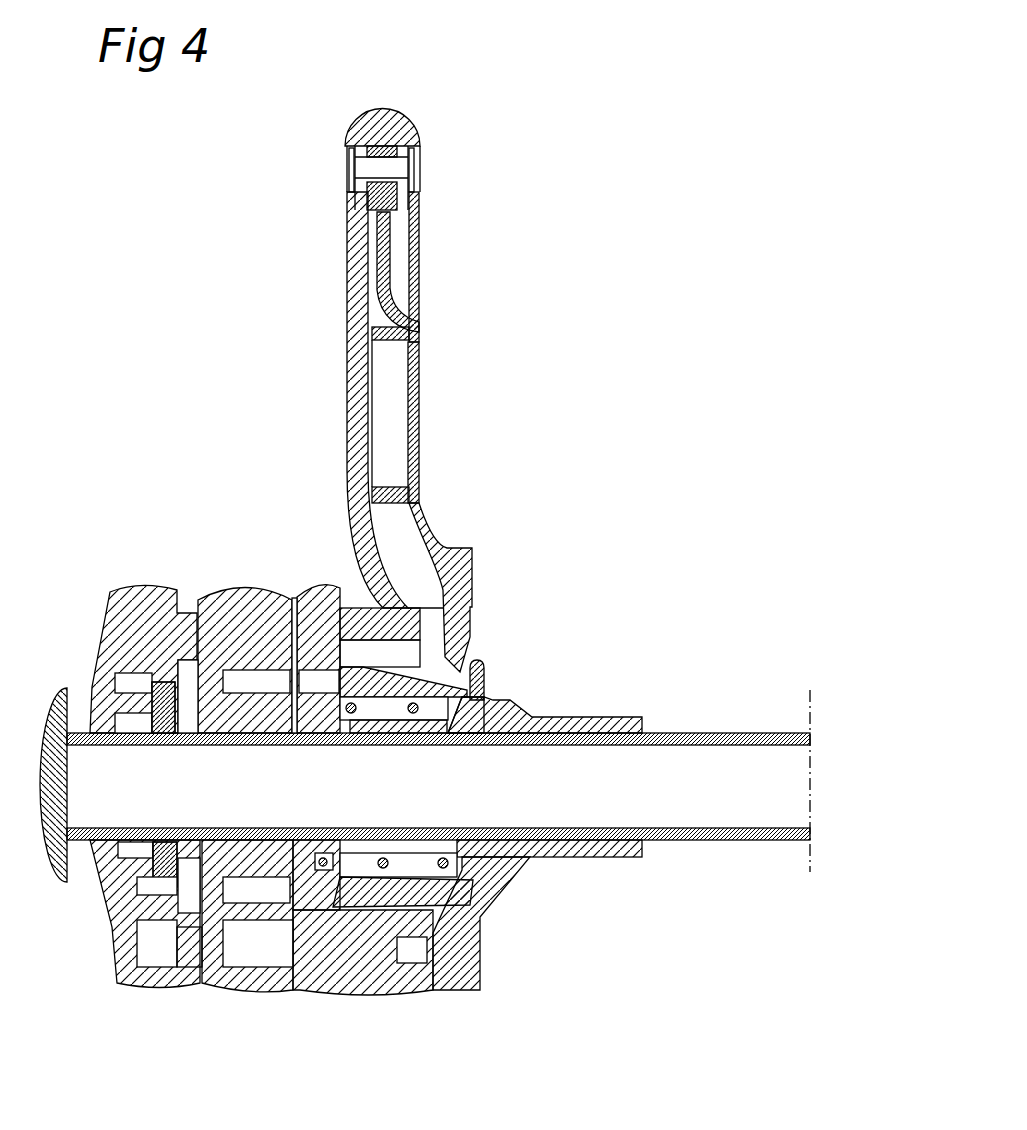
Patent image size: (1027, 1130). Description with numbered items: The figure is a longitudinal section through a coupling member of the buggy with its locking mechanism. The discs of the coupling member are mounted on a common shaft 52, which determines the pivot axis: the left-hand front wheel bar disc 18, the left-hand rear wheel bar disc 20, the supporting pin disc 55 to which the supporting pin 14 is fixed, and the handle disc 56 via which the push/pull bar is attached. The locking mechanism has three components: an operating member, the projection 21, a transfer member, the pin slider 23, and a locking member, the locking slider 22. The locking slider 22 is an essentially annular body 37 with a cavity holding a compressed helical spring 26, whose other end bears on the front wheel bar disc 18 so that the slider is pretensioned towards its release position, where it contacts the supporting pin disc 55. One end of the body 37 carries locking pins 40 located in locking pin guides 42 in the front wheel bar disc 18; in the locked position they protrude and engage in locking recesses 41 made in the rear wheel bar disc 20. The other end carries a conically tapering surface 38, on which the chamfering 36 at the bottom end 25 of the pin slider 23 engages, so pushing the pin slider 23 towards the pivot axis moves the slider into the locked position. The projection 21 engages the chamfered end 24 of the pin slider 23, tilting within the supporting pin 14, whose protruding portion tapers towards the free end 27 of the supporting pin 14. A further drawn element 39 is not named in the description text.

The supporting pin 14 is at (356, 320).
The left-hand front wheel bar disc 18 is at (343, 950).
The left-hand rear wheel bar disc 20 is at (237, 982).
The projection 21 is at (398, 208).
The locking slider 22 is at (478, 746).
The pin slider 23 is at (412, 386).
The end of the pin slider 24 is at (386, 246).
The bottom end of the pin slider 25 is at (468, 637).
The helical spring 26 is at (383, 868).
The free end of the supporting pin 27 is at (386, 126).
The chamfering 36 is at (468, 652).
The annular body 37 is at (433, 747).
The conically tapering surface 38 is at (518, 708).
The ball 39 is at (322, 868).
The locking pins 40 is at (313, 683).
The locking recesses 41 is at (253, 680).
The locking pin guides 42 is at (292, 673).
The shaft 52 is at (720, 731).
The supporting pin disc 55 is at (457, 977).
The handle disc 56 is at (122, 626).